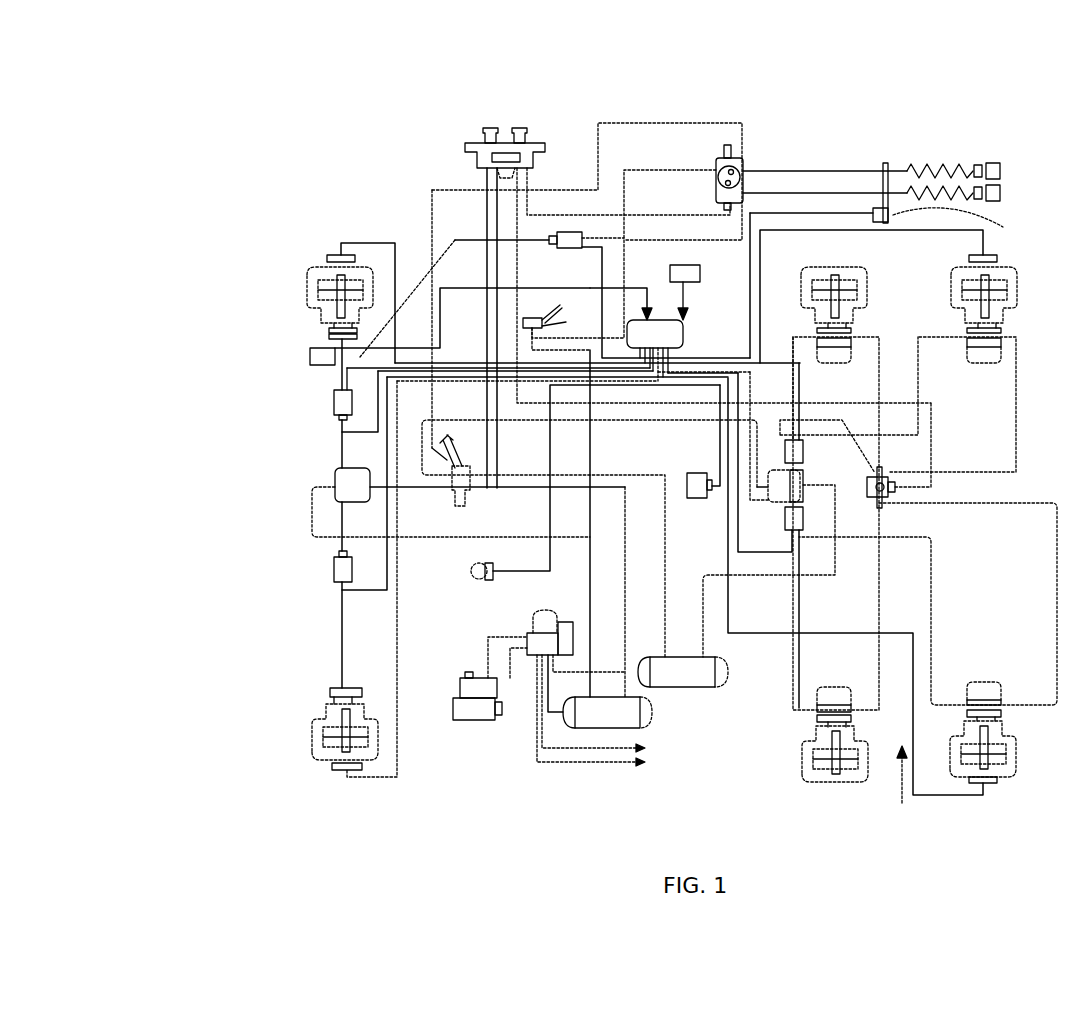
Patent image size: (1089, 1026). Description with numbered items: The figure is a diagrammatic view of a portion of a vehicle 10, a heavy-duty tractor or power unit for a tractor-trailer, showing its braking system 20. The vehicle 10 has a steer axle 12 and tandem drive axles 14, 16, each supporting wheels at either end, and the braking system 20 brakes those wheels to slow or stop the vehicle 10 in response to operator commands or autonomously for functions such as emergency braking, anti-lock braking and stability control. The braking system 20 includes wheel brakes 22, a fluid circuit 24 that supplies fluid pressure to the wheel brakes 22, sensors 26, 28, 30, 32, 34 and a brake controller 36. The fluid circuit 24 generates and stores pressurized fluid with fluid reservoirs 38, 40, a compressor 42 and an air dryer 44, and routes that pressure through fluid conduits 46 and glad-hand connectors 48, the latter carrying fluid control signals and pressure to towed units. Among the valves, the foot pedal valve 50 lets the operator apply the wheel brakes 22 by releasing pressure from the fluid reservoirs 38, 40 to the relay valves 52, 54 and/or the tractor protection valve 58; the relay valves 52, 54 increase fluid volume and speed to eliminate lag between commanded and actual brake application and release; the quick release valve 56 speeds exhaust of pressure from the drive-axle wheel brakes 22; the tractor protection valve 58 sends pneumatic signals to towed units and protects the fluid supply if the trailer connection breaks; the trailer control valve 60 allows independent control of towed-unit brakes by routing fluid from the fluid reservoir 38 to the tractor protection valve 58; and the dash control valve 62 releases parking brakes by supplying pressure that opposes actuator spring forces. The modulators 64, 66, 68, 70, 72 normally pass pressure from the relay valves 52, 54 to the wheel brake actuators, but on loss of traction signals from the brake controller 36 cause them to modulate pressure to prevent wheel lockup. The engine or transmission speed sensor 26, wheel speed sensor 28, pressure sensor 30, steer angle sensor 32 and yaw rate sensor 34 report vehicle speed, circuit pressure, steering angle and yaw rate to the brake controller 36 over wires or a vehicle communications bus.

The vehicle 10 is at (213, 158).
The steer axle 12 is at (325, 797).
The tandem drive axle 14 is at (840, 810).
The tandem drive axle 16 is at (993, 810).
The braking system 20 is at (415, 105).
The wheel brakes 22 is at (300, 280).
The fluid circuit 24 is at (498, 774).
The engine or transmission speed sensor 26 is at (692, 283).
The wheel speed sensor 28 is at (335, 254).
The pressure sensor 30 is at (305, 356).
The steer angle sensor 32 is at (471, 571).
The yaw rate sensor 34 is at (686, 482).
The brake controller 36 is at (672, 340).
The fluid reservoir 38 is at (640, 728).
The fluid reservoir 40 is at (710, 694).
The compressor 42 is at (470, 715).
The air dryer 44 is at (543, 650).
The fluid conduits 46 is at (933, 563).
The glad-hand connectors 48 is at (1002, 143).
The foot pedal valve 50 is at (458, 482).
The relay valve 52 is at (334, 480).
The relay valve 54 is at (782, 495).
The quick release valve 56 is at (893, 484).
The tractor protection valve 58 is at (742, 160).
The trailer control valve 60 is at (548, 322).
The dash control valve 62 is at (500, 128).
The modulator 64 is at (328, 402).
The modulator 66 is at (333, 570).
The modulator 68 is at (803, 455).
The modulator 70 is at (803, 520).
The modulator 72 is at (565, 230).